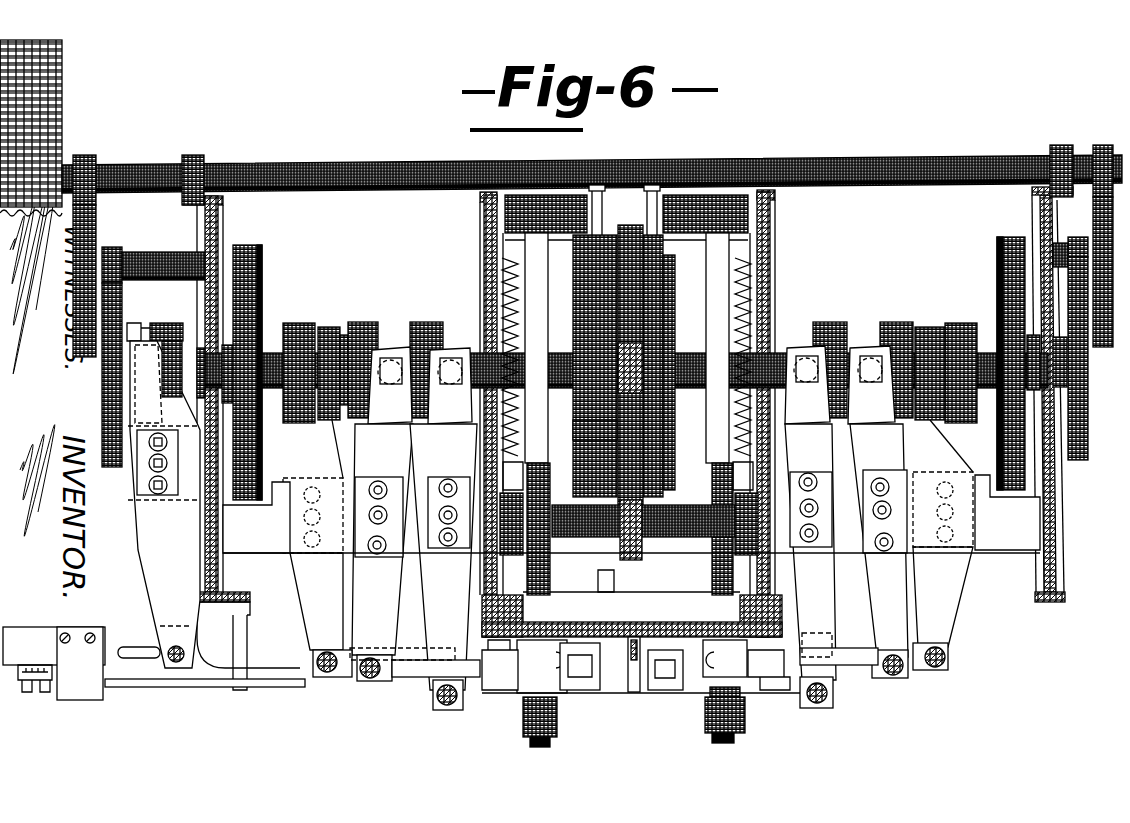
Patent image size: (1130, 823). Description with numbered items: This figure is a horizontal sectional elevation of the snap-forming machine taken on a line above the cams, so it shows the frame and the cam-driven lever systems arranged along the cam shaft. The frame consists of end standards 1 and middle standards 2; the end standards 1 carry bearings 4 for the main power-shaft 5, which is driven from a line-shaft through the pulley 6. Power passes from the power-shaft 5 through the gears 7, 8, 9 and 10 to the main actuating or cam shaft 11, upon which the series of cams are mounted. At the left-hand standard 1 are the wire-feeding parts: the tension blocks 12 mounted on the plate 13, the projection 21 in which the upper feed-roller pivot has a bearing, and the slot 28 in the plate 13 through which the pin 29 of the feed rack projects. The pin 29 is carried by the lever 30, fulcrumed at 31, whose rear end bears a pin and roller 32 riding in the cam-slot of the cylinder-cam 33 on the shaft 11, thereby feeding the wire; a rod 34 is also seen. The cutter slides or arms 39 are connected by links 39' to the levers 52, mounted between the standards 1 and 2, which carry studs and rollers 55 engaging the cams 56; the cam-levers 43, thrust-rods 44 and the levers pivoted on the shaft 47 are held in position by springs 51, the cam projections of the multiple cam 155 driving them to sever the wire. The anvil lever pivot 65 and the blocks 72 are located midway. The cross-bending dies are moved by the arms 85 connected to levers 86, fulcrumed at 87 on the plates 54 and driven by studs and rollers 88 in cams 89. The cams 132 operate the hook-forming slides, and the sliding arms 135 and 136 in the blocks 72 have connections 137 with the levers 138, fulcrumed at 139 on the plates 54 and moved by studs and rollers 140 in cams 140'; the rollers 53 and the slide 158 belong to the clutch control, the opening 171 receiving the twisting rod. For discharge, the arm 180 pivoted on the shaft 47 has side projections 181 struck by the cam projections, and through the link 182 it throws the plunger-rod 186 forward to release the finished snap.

The end standard 1 is at (223, 222).
The middle standard 2 is at (484, 212).
The bearing 4 is at (205, 160).
The main power-shaft 5 is at (784, 162).
The pulley 6 is at (62, 113).
The gear 7 is at (95, 160).
The gear 8 is at (97, 230).
The gear 9 is at (121, 250).
The gear 10 is at (102, 405).
The main actuating or cam shaft 11 is at (268, 350).
The tension block 12 is at (44, 694).
The plate 13 is at (40, 635).
The projection 21 is at (80, 663).
The slot 28 is at (140, 647).
The pin 29 is at (175, 646).
The lever 30 is at (165, 504).
The fulcrum 31 is at (150, 472).
The pin and roller 32 is at (146, 362).
The cylinder-cam 33 is at (165, 324).
The rod 34 is at (266, 680).
The sliding arm 39 is at (632, 683).
The link 39' is at (630, 684).
The cam-lever 43 is at (528, 745).
The thrust-rod 44 is at (538, 243).
The shaft 47 is at (535, 195).
The spring 51 is at (500, 278).
The lever 52 is at (631, 535).
The roller 53 is at (316, 486).
The plate 54 is at (631, 514).
The stud and roller 55 is at (312, 424).
The cam 56 is at (298, 324).
The pivot 65 is at (648, 552).
The block 72 is at (632, 666).
The arm 85 is at (410, 658).
The lever 86 is at (630, 540).
The fulcrum 87 is at (370, 480).
The stud and roller 88 is at (390, 385).
The cam 89 is at (362, 323).
The cam 132 is at (260, 278).
The sliding arm 135 is at (594, 692).
The sliding arm 136 is at (668, 692).
The connection 137 is at (497, 695).
The lever 138 is at (623, 557).
The fulcrum 139 is at (805, 478).
The stud and roller 140 is at (629, 396).
The cam 140' is at (638, 350).
The multiple cam 155 is at (595, 304).
The slide 158 is at (592, 422).
The opening 171 is at (633, 695).
The arm 180 is at (628, 195).
The side projection 181 is at (655, 315).
The link 182 is at (648, 515).
The plunger-rod 186 is at (598, 592).